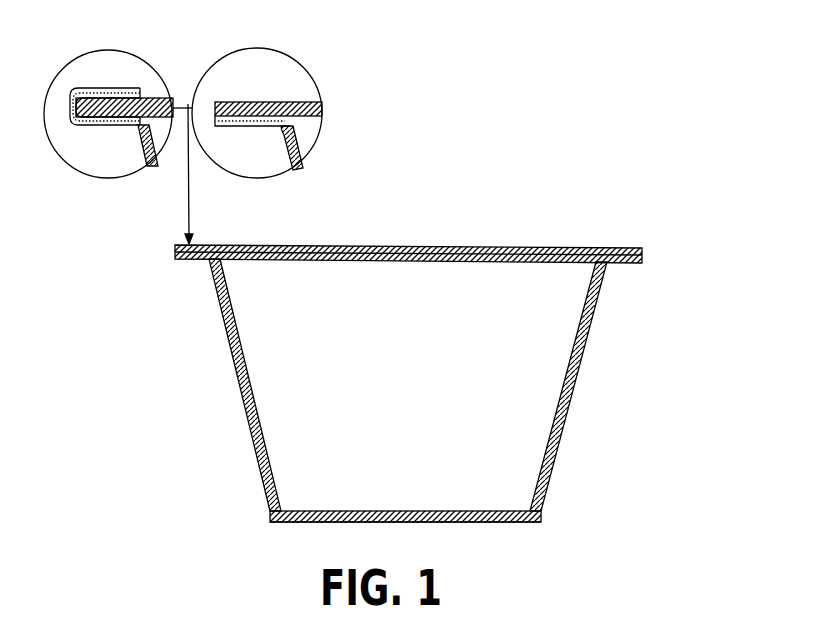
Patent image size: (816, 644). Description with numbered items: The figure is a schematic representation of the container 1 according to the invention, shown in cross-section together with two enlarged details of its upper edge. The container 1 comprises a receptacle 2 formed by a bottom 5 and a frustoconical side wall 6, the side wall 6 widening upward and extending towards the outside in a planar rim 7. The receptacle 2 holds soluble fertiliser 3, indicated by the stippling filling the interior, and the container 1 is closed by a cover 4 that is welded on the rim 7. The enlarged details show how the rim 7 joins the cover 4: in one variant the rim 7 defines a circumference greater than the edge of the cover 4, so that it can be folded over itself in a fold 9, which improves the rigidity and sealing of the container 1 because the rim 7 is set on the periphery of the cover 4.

The container 1 is at (436, 374).
The receptacle 2 is at (542, 513).
The soluble fertiliser 3 is at (528, 403).
The cover 4 is at (460, 247).
The bottom 5 is at (504, 523).
The frustoconical side wall 6 is at (558, 440).
The planar rim 7 is at (103, 124).
The fold 9 is at (106, 95).